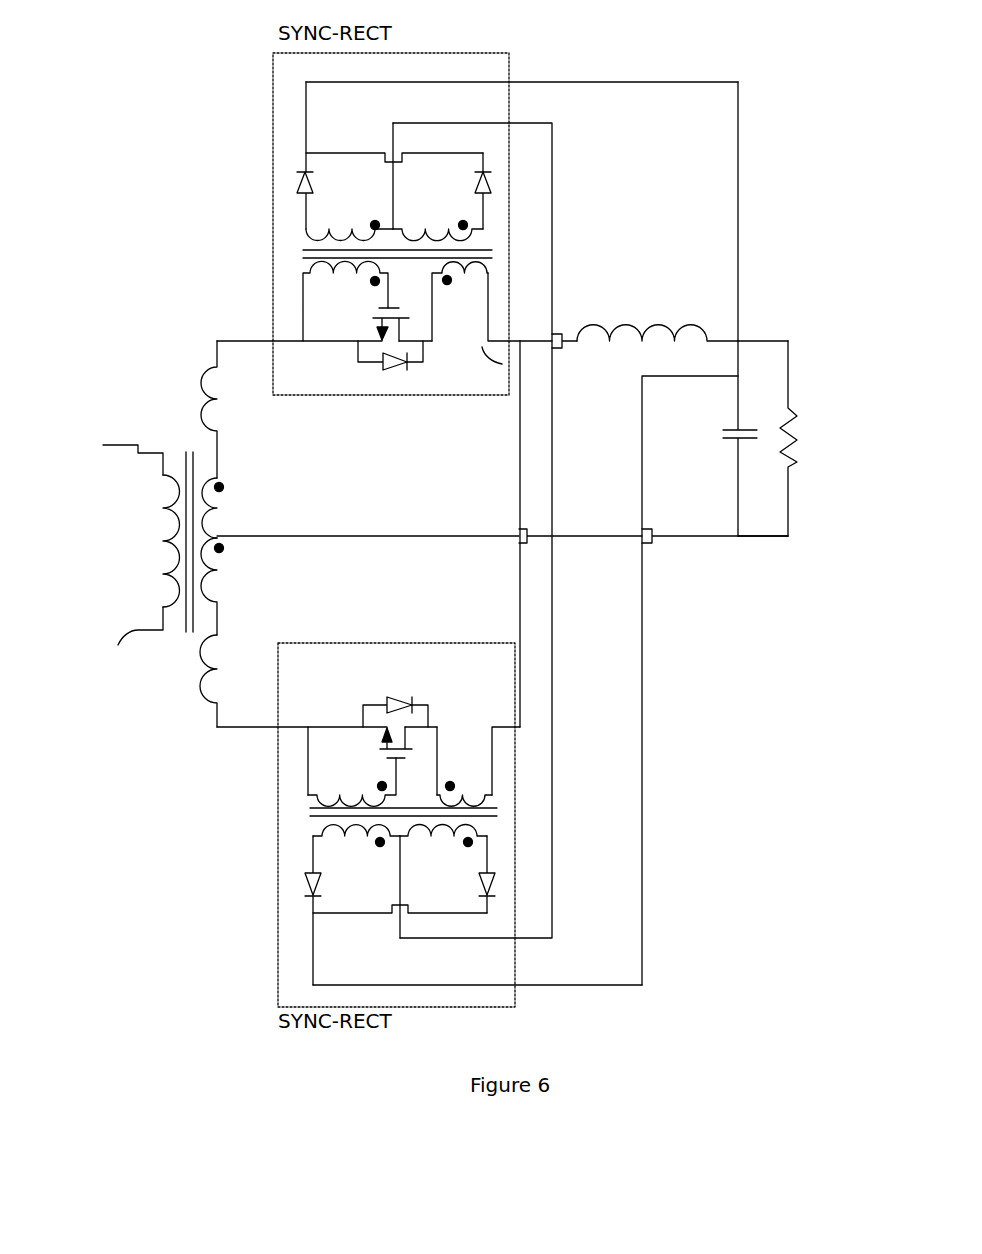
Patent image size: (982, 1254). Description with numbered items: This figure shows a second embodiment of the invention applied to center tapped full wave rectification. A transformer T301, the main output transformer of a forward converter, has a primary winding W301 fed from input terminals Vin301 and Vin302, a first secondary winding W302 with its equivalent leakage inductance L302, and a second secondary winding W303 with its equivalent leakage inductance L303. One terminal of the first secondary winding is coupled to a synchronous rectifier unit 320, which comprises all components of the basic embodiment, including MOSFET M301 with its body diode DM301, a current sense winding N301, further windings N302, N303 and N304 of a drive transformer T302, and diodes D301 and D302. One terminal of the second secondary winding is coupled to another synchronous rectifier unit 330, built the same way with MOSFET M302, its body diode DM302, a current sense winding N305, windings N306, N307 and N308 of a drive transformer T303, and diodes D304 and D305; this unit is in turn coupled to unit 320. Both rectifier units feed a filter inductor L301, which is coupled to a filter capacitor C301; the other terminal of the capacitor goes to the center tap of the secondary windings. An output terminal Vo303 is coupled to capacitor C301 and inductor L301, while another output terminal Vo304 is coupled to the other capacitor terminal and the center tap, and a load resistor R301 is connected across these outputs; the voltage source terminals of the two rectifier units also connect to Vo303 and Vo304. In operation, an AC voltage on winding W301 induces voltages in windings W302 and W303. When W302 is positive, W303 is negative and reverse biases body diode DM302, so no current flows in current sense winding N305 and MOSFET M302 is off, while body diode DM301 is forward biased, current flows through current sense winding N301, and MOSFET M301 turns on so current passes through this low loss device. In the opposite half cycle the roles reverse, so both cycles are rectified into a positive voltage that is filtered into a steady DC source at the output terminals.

The synchronous rectifier unit 320 is at (253, 131).
The synchronous rectifier unit 330 is at (263, 960).
The transformer T301 is at (199, 427).
The drive transformer T302 is at (277, 259).
The drive transformer T303 is at (285, 824).
The primary winding W301 is at (167, 547).
The first secondary winding W302 is at (223, 515).
The second secondary winding W303 is at (218, 553).
The filter inductor L301 is at (660, 307).
The equivalent leakage inductance L302 is at (218, 378).
The equivalent leakage inductance L303 is at (212, 685).
The filter capacitor C301 is at (732, 447).
The load resistor R301 is at (803, 438).
The diode D301 is at (508, 168).
The diode D302 is at (295, 188).
The diode D304 is at (502, 878).
The diode D305 is at (300, 880).
The MOSFET M301 is at (373, 325).
The MOSFET M302 is at (380, 747).
The body diode DM301 is at (385, 370).
The body diode DM302 is at (442, 683).
The current sense winding N301 is at (460, 272).
The winding N302 is at (340, 278).
The winding N303 is at (427, 223).
The winding N304 is at (358, 222).
The current sense winding N305 is at (472, 792).
The winding N306 is at (345, 790).
The winding N307 is at (433, 837).
The winding N308 is at (363, 847).
The input terminal Vin301 is at (114, 449).
The input terminal Vin302 is at (114, 639).
The output terminal Vo303 is at (800, 310).
The output terminal Vo304 is at (765, 552).